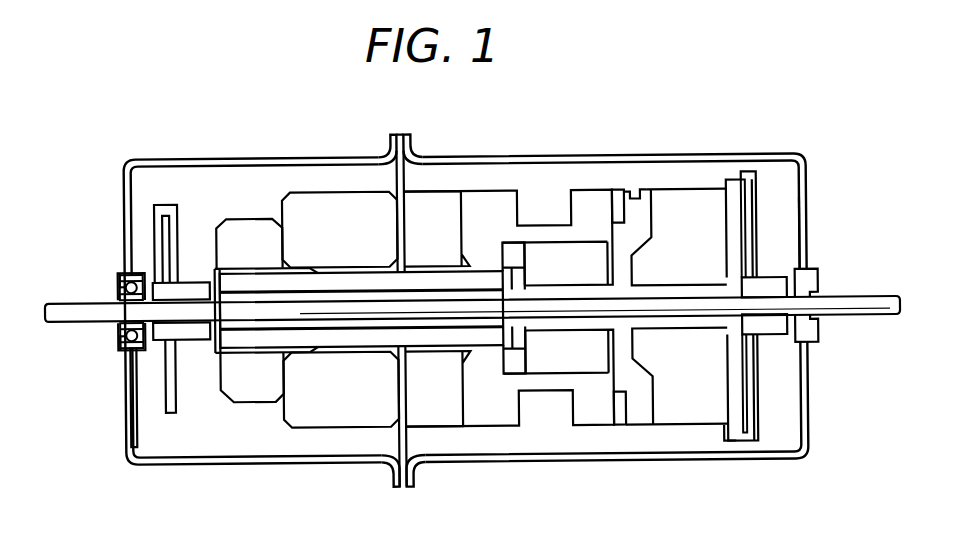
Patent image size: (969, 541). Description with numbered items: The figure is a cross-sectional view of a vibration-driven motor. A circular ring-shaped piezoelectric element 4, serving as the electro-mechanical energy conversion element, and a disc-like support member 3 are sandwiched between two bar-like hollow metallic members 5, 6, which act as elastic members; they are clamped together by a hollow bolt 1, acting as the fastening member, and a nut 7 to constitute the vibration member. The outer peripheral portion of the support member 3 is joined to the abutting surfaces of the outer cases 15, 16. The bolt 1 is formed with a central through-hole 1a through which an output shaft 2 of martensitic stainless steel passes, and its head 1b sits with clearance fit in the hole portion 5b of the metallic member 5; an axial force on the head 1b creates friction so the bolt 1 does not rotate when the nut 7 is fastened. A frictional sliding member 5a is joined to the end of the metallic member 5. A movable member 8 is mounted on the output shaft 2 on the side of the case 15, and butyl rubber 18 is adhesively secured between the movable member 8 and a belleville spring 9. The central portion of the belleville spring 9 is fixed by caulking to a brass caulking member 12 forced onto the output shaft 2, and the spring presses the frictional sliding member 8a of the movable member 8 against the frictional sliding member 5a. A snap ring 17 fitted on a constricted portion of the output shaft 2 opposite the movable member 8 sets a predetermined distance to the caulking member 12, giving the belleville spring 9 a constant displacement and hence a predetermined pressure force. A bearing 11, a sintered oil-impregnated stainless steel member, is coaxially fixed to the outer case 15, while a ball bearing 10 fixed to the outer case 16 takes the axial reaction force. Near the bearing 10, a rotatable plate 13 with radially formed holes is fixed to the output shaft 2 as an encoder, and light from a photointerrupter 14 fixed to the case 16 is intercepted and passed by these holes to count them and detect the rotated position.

The bolt 1 is at (348, 347).
The through-hole 1a is at (237, 335).
The head 1b is at (510, 358).
The output shaft 2 is at (878, 320).
The support member 3 is at (414, 474).
The piezoelectric element 4 is at (436, 198).
The metallic member 5 is at (598, 412).
The frictional sliding member 5a is at (625, 415).
The hole portion 5b is at (556, 368).
The metallic member 6 is at (300, 417).
The nut 7 is at (250, 233).
The movable member 8 is at (690, 193).
The frictional sliding member 8a is at (640, 192).
The belleville spring 9 is at (760, 193).
The bearing 10 is at (128, 352).
The bearing 11 is at (810, 337).
The caulking member 12 is at (765, 328).
The rotatable plate 13 is at (178, 200).
The photointerrupter 14 is at (130, 212).
The outer case 15 is at (570, 156).
The outer case 16 is at (325, 157).
The snap ring 17 is at (118, 333).
The butyl rubber 18 is at (745, 182).